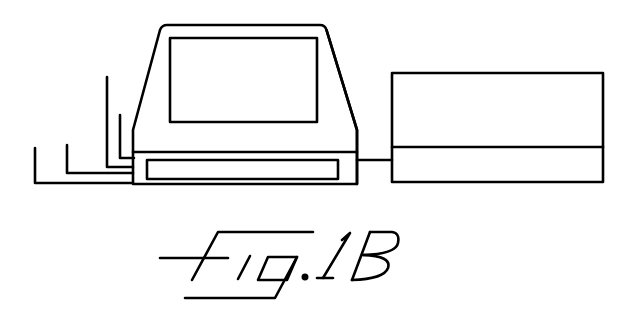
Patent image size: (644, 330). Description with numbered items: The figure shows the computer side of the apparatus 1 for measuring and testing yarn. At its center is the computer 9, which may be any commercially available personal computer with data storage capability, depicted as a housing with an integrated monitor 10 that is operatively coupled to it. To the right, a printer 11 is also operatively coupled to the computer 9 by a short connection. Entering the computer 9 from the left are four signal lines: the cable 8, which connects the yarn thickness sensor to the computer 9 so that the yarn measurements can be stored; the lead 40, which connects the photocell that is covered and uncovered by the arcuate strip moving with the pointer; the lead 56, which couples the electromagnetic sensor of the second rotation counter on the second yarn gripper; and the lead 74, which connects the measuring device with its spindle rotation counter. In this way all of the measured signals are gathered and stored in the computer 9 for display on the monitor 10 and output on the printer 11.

The apparatus 1 is at (57, 81).
The cable 8 is at (106, 106).
The computer 9 is at (348, 162).
The monitor 10 is at (302, 55).
The printer 11 is at (460, 85).
The lead 40 is at (67, 161).
The lead 56 is at (121, 119).
The lead 74 is at (36, 150).